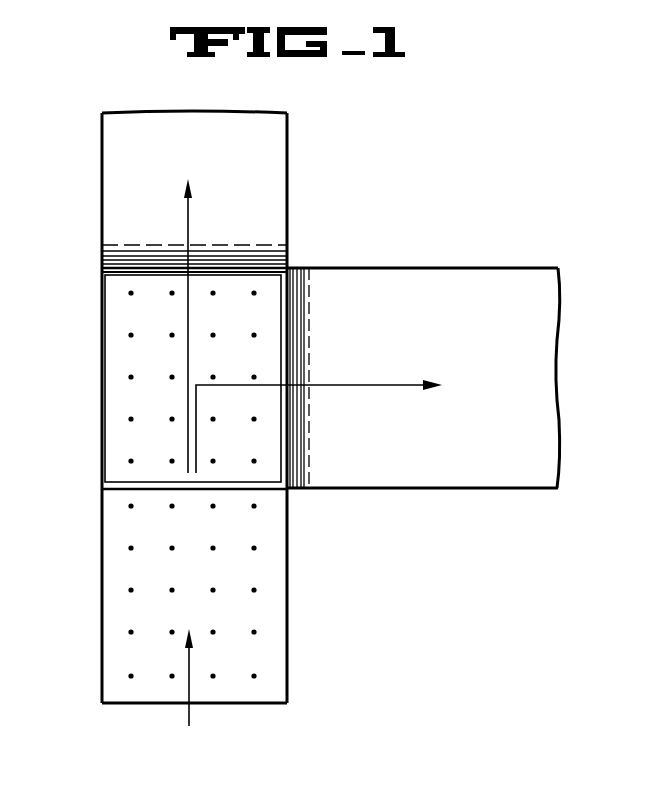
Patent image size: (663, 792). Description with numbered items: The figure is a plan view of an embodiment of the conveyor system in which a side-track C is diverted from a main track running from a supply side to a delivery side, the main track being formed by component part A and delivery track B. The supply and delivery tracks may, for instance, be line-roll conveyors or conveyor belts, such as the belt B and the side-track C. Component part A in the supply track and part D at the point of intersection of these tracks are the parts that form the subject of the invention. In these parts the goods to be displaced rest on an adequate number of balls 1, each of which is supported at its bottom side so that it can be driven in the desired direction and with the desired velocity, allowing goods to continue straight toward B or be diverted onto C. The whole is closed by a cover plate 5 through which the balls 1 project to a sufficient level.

The component part in the supply track A is at (272, 698).
The delivery track B is at (183, 120).
The side-track C is at (553, 384).
The part at the point of intersection D is at (271, 284).
The balls 1 is at (130, 420).
The cover plate 5 is at (120, 314).